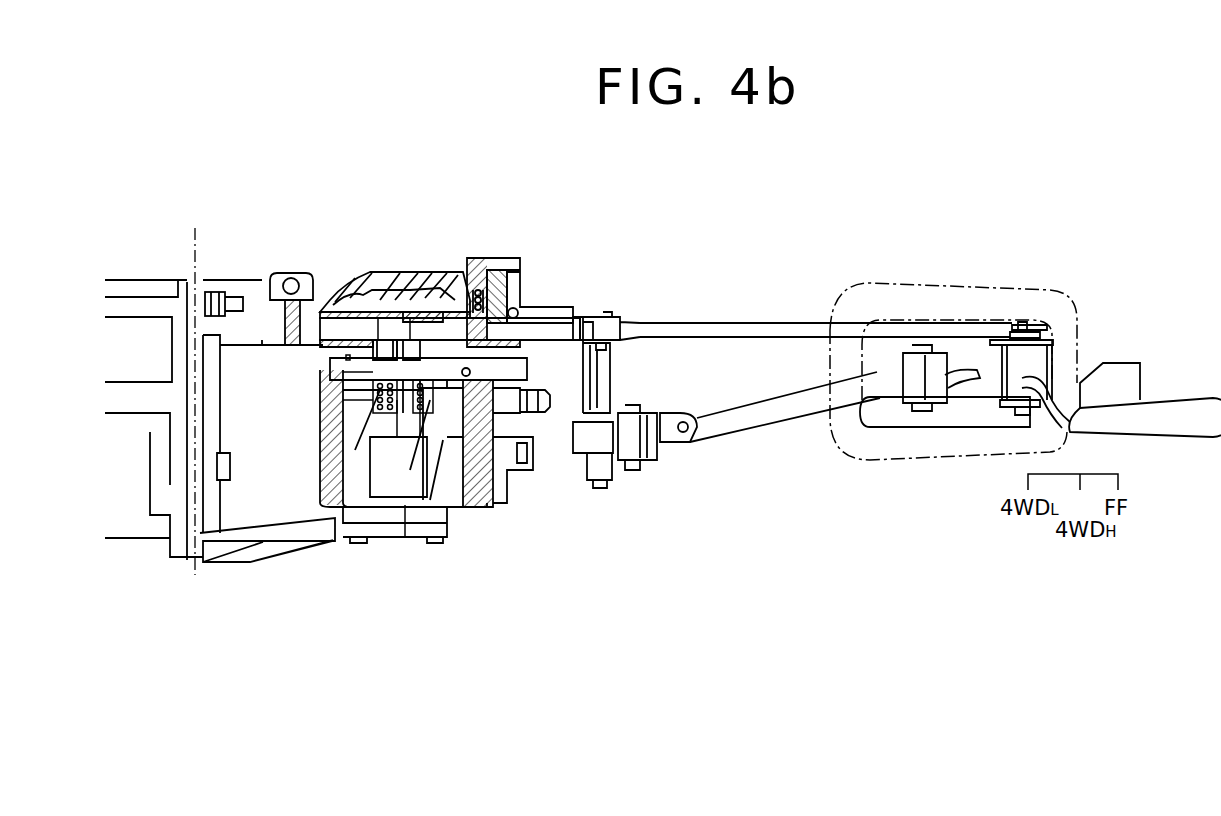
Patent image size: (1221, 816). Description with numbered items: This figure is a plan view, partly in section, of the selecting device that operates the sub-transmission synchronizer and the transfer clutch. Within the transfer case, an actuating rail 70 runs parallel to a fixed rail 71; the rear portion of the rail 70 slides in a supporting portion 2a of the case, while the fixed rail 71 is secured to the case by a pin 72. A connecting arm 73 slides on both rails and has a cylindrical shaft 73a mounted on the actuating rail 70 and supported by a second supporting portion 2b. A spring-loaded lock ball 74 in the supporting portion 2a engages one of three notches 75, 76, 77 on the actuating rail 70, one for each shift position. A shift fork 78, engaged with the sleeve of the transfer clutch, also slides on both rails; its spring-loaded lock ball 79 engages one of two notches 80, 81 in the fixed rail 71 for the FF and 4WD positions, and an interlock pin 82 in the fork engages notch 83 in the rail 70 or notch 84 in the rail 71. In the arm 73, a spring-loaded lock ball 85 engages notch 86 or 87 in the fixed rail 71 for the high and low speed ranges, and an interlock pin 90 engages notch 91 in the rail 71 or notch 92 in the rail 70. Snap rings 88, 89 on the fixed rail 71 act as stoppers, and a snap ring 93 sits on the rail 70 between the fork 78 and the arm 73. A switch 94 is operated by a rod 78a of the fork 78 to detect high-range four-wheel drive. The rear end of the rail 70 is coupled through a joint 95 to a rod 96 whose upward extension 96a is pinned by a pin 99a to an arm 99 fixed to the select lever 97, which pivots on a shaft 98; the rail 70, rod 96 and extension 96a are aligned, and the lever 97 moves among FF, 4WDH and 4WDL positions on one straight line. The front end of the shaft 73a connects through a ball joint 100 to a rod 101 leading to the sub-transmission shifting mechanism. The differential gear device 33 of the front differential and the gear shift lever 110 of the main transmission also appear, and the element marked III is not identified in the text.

The supporting portion 2a is at (487, 300).
The supporting portion 2b is at (333, 433).
The differential gear device 33 is at (497, 453).
The actuating rail 70 is at (460, 323).
The fixed rail 71 is at (466, 372).
The pin 72 is at (520, 374).
The connecting arm 73 is at (355, 300).
The cylindrical shaft 73a is at (290, 346).
The spring-loaded lock ball 74 is at (507, 307).
The notch 75 is at (518, 312).
The notch 76 is at (560, 318).
The notch 77 is at (583, 320).
The shift fork 78 is at (427, 312).
The rod 78a is at (410, 505).
The spring-loaded lock ball 79 is at (420, 390).
The notch 80 is at (440, 403).
The notch 81 is at (403, 395).
The interlock pin 82 is at (428, 373).
The notch 83 is at (450, 336).
The notch 84 is at (397, 407).
The spring-loaded lock ball 85 is at (378, 402).
The notch 86 is at (345, 400).
The notch 87 is at (345, 373).
The snap ring 88 is at (384, 427).
The snap ring 89 is at (345, 390).
The interlock pin 90 is at (380, 340).
The notch 91 is at (347, 355).
The notch 92 is at (397, 337).
The snap ring 93 is at (410, 340).
The switch 94 is at (540, 413).
The joint 95 is at (620, 322).
The rod 96 is at (762, 322).
The upward extension 96a is at (1042, 325).
The select lever 97 is at (1177, 408).
The shaft 98 is at (1003, 410).
The arm 99 is at (1050, 337).
The pin 99a is at (1020, 322).
The ball joint 100 is at (287, 272).
The rod 101 is at (143, 303).
The gear shift lever 110 is at (972, 370).
The link lever III is at (755, 422).